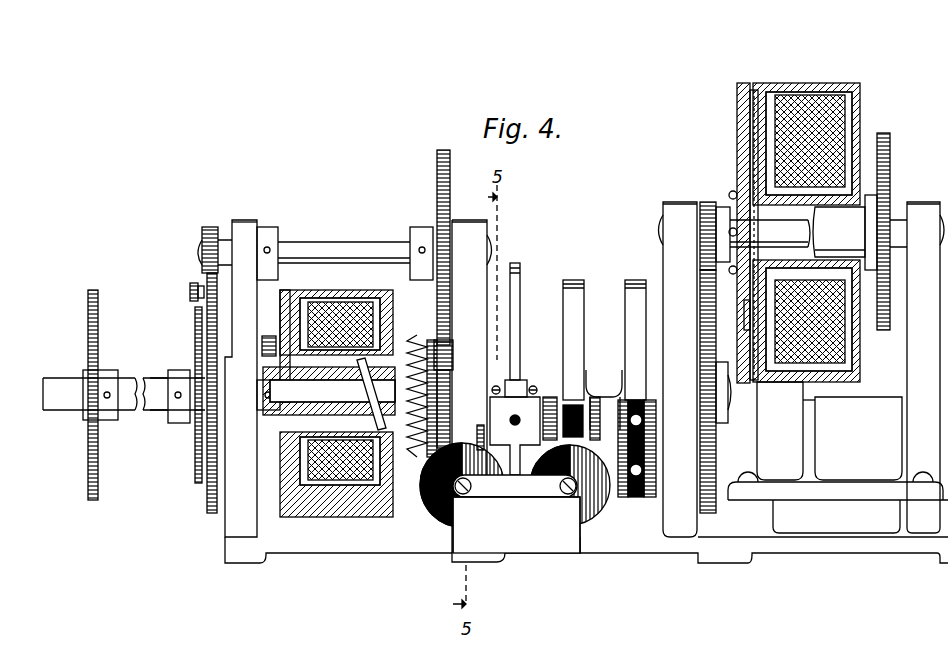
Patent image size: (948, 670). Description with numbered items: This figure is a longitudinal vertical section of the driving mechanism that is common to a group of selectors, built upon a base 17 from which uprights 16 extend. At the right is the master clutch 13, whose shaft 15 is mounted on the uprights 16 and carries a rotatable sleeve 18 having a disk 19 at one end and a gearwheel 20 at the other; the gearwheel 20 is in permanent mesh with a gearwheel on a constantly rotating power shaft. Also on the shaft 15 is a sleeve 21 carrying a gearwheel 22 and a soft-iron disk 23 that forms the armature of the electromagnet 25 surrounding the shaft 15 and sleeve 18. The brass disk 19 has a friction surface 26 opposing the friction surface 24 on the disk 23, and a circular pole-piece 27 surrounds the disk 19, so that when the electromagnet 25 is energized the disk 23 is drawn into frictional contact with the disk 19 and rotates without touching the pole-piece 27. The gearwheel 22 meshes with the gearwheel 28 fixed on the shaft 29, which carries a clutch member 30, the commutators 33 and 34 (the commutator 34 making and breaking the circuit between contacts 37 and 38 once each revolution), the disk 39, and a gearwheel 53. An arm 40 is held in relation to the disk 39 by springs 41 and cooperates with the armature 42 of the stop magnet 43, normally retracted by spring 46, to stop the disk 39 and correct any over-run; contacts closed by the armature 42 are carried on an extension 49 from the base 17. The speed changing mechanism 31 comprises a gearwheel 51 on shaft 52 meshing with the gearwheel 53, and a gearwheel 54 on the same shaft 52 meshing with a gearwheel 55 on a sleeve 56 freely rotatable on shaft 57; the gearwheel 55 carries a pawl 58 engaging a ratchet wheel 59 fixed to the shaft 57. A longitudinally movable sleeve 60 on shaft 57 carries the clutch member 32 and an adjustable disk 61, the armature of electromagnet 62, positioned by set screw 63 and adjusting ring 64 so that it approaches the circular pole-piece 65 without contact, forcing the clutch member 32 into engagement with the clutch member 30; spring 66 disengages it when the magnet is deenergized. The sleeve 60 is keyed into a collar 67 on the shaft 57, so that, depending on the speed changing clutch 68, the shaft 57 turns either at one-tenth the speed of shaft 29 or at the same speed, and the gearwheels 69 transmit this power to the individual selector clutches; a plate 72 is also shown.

The master clutch 13 is at (821, 209).
The shaft 15 is at (770, 231).
The uprights 16 is at (245, 220).
The base 17 is at (702, 557).
The sleeve 18 is at (860, 232).
The disk 19 is at (783, 88).
The gearwheel 20 is at (890, 178).
The sleeve 21 is at (724, 210).
The gearwheel 22 is at (706, 205).
The disk 23 is at (746, 78).
The friction surface 24 is at (748, 378).
The electromagnet 25 is at (822, 142).
The friction surface 26 is at (744, 312).
The circular pole-piece 27 is at (757, 98).
The gearwheel 28 is at (710, 345).
The shaft 29 is at (590, 382).
The clutch member 30 is at (430, 456).
The speed changing mechanism 31 is at (329, 194).
The clutch member 32 is at (415, 456).
The commutator 33 is at (571, 351).
The commutator 34 is at (634, 331).
The contact 37 is at (650, 410).
The contact 38 is at (648, 445).
The disk 39 is at (520, 297).
The arm 40 is at (520, 378).
The springs 41 is at (534, 384).
The armature 42 is at (500, 422).
The stop magnet 43 is at (440, 505).
The retracting spring 46 is at (485, 440).
The extension 49 is at (516, 514).
The gearwheel 51 is at (437, 170).
The shaft 52 is at (345, 242).
The gearwheel 53 is at (452, 362).
The gearwheel 54 is at (211, 227).
The gearwheel 55 is at (209, 492).
The sleeve 56 is at (178, 425).
The shaft 57 is at (165, 413).
The pawl 58 is at (190, 298).
The ratchet wheel 59 is at (197, 452).
The sleeve 60 is at (362, 384).
The disk 61 is at (288, 292).
The electromagnet 62 is at (351, 309).
The set screw 63 is at (264, 342).
The adjusting ring 64 is at (285, 425).
The circular pole-piece 65 is at (312, 292).
The spring 66 is at (339, 394).
The collar 67 is at (265, 417).
The speed changing clutch 68 is at (340, 307).
The gearwheels 69 is at (98, 332).
The plate 72 is at (467, 218).